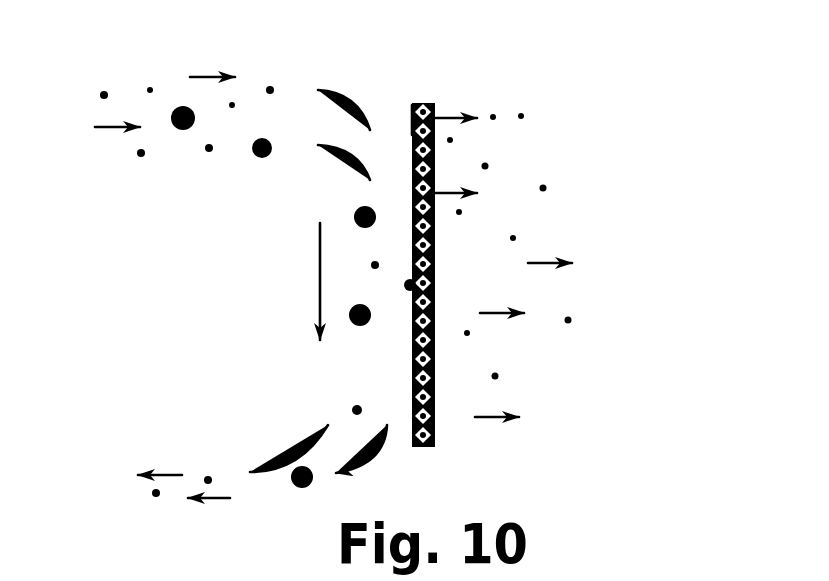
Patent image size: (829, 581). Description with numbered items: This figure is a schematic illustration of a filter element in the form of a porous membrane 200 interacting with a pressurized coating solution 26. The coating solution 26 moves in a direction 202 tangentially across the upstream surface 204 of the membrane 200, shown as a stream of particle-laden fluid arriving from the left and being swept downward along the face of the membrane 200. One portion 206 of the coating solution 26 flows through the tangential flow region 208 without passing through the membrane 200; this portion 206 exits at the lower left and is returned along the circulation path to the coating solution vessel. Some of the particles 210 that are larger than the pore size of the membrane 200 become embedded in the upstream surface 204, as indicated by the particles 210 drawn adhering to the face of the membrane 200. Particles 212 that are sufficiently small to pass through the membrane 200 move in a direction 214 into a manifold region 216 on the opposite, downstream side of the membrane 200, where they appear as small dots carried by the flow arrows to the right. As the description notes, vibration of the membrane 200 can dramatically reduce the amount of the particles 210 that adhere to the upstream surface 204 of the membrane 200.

The coating solution 26 is at (112, 78).
The porous membrane 200 is at (423, 103).
The direction 202 is at (318, 255).
The upstream surface 204 is at (412, 118).
The portion of coating solution 206 is at (202, 460).
The tangential flow region 208 is at (370, 245).
The particles 210 is at (410, 290).
The particles 212 is at (485, 166).
The direction 214 is at (535, 263).
The manifold region 216 is at (775, 271).